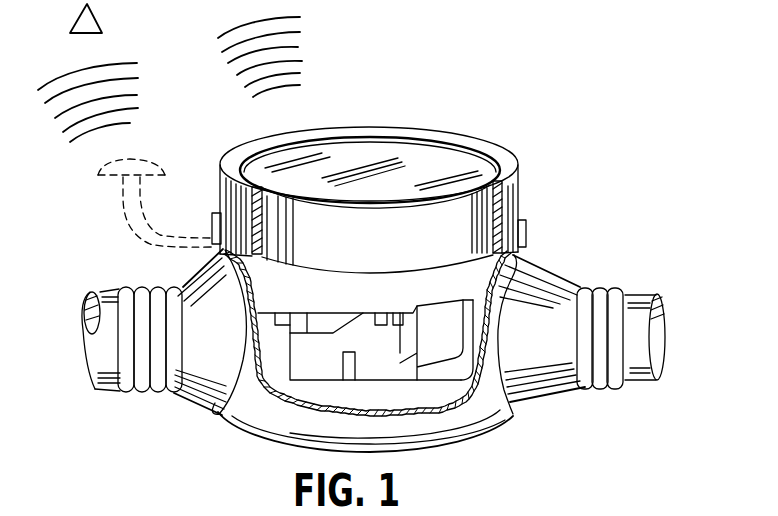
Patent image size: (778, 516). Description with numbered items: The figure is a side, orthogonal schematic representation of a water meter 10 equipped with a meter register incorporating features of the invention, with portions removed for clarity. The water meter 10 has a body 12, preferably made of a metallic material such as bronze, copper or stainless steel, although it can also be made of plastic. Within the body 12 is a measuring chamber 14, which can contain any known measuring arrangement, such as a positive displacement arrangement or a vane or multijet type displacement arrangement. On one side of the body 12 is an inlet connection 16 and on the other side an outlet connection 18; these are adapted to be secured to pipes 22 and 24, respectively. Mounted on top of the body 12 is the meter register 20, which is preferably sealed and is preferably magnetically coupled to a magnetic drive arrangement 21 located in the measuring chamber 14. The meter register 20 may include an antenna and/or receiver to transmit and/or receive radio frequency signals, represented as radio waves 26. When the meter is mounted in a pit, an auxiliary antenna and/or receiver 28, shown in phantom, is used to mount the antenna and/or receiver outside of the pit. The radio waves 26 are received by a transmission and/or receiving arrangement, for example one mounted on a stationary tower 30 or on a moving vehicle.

The water meter 10 is at (190, 410).
The body 12 is at (548, 393).
The measuring chamber 14 is at (443, 360).
The inlet connection 16 is at (183, 277).
The outlet connection 18 is at (563, 272).
The meter register 20 is at (443, 238).
The magnetic drive arrangement 21 is at (302, 370).
The pipe 22 is at (103, 395).
The pipe 24 is at (641, 386).
The radio waves 26 is at (138, 78).
The auxiliary antenna and/or receiver 28 is at (118, 215).
The stationary tower 30 is at (100, 15).